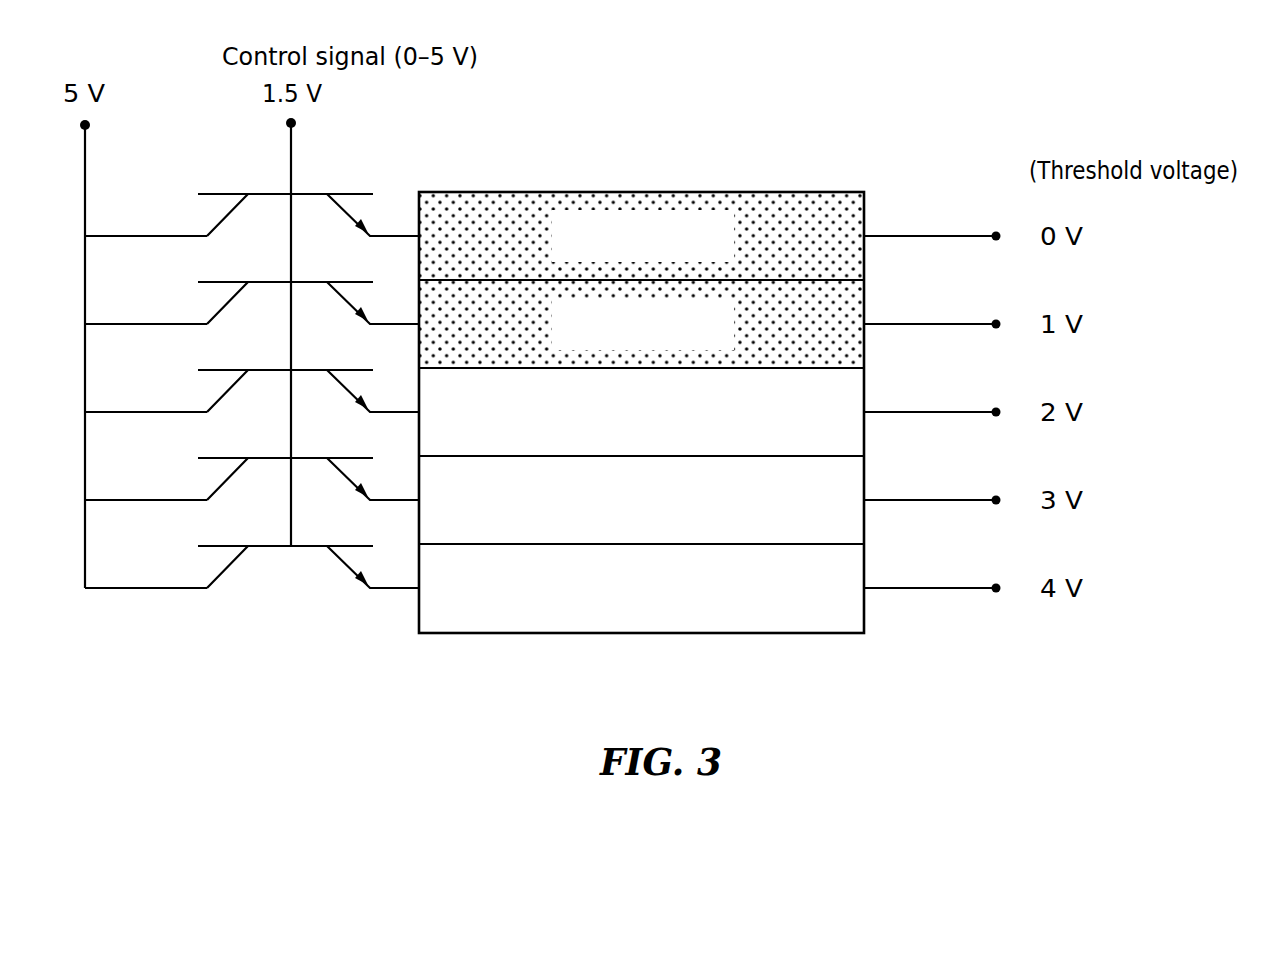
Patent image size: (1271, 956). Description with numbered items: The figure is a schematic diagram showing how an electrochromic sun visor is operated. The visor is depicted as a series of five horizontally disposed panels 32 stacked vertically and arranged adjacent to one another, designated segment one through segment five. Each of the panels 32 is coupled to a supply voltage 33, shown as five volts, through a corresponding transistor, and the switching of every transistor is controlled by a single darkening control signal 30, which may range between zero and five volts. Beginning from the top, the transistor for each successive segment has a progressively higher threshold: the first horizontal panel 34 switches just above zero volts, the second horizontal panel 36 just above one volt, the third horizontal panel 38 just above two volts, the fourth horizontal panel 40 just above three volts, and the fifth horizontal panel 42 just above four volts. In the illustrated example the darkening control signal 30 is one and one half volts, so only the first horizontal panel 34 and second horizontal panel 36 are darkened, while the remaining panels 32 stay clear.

The darkening control signal 30 is at (291, 158).
The horizontally disposed panels 32 is at (497, 636).
The supply voltage 33 is at (85, 155).
The first horizontal panel 34 is at (866, 216).
The second horizontal panel 36 is at (866, 311).
The third horizontal panel 38 is at (866, 396).
The fourth horizontal panel 40 is at (866, 481).
The fifth horizontal panel 42 is at (866, 570).